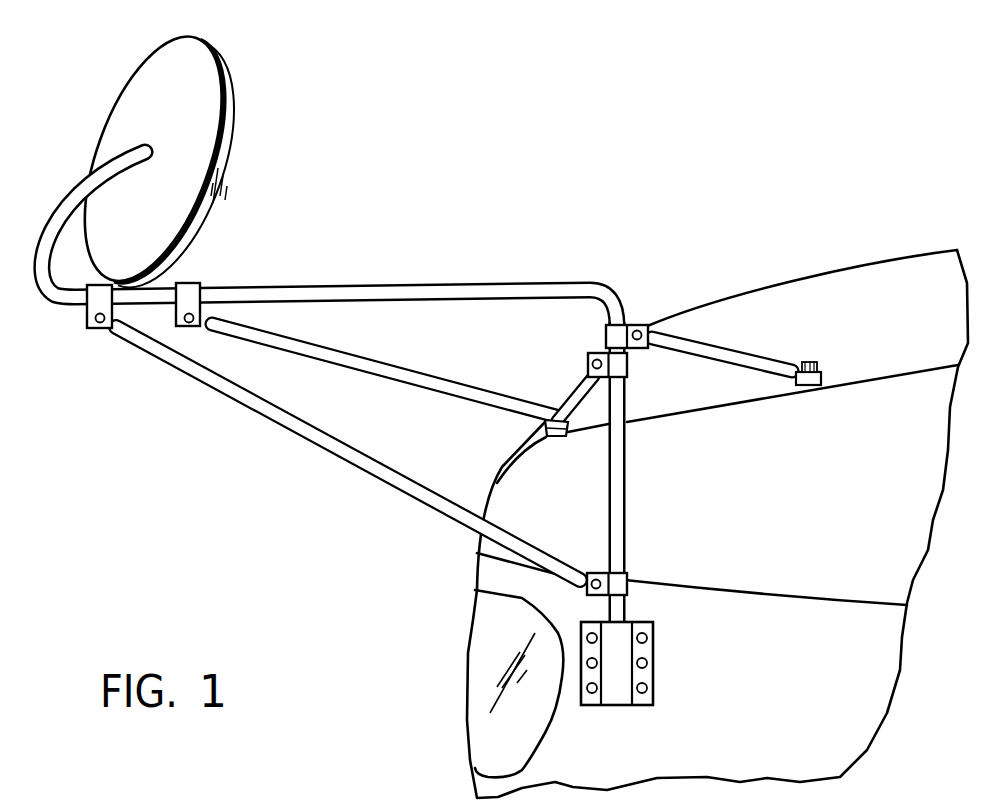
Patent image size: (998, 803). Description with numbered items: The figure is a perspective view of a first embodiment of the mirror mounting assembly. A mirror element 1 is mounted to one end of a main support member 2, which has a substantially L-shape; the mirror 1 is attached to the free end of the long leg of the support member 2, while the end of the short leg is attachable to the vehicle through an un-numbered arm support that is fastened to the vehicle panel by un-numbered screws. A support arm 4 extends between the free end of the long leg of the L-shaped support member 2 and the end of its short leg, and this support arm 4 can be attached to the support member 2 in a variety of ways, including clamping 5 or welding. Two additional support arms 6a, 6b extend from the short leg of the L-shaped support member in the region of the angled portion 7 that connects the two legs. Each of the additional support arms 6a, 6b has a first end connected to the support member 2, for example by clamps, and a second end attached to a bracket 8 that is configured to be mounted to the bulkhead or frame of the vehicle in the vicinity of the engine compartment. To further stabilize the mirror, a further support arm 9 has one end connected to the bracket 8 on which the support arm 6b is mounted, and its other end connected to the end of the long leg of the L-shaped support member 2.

The mirror element 1 is at (220, 67).
The main support member 2 is at (627, 493).
The support arm 4 is at (358, 462).
The clamping 5 is at (85, 323).
The additional support arm 6a is at (751, 348).
The additional support arm 6b is at (573, 382).
The angled portion 7 is at (611, 292).
The bracket 8 is at (803, 388).
The further support arm 9 is at (441, 388).